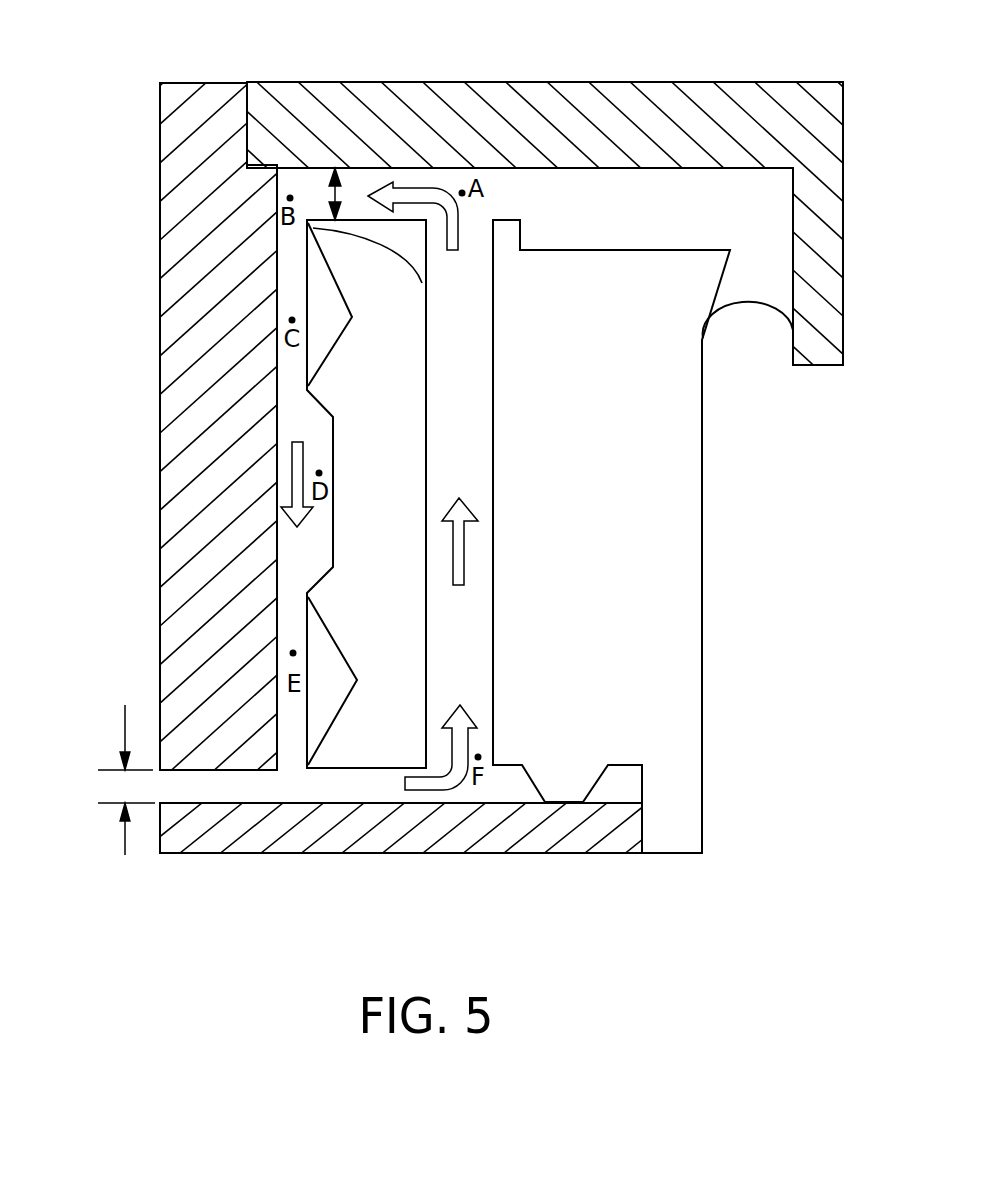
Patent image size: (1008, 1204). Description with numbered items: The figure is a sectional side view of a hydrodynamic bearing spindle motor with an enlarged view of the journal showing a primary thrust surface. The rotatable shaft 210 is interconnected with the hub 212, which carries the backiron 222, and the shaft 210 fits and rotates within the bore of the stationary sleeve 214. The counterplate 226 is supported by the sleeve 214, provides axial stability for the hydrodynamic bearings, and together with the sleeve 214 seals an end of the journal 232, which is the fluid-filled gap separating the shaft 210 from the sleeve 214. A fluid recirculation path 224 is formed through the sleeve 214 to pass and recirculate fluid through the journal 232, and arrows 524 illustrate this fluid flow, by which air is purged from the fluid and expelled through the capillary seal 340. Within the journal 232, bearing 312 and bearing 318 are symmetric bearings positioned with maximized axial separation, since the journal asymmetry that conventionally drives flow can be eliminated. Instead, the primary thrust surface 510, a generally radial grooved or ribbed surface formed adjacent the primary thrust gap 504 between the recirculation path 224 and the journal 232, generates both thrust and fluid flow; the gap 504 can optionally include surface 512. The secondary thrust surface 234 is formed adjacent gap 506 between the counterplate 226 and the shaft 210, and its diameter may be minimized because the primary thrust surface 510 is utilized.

The shaft 210 is at (243, 335).
The hub 212 is at (572, 90).
The sleeve 214 is at (362, 648).
The backiron 222 is at (817, 245).
The fluid recirculation path 224 is at (483, 692).
The counterplate 226 is at (458, 835).
The journal 232 is at (290, 297).
The secondary thrust surface 234 is at (200, 803).
The bearing 312 is at (340, 355).
The bearing 318 is at (348, 700).
The capillary seal 340 is at (757, 308).
The primary thrust gap 504 is at (345, 192).
The gap 506 is at (123, 838).
The primary thrust surface 510 is at (388, 250).
The surface 512 is at (505, 244).
The arrows 524 is at (452, 507).